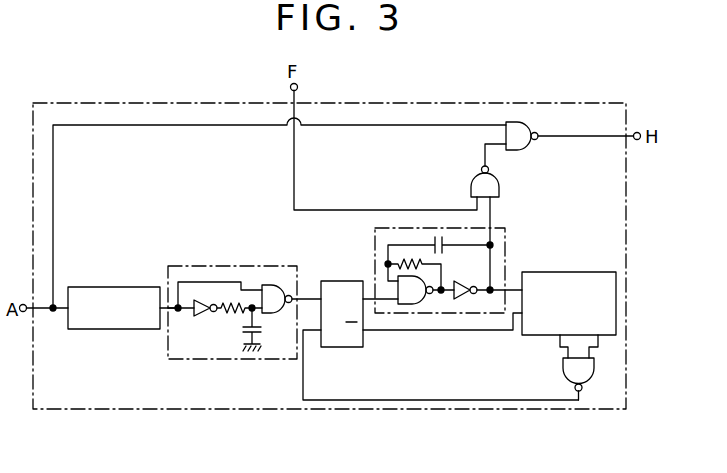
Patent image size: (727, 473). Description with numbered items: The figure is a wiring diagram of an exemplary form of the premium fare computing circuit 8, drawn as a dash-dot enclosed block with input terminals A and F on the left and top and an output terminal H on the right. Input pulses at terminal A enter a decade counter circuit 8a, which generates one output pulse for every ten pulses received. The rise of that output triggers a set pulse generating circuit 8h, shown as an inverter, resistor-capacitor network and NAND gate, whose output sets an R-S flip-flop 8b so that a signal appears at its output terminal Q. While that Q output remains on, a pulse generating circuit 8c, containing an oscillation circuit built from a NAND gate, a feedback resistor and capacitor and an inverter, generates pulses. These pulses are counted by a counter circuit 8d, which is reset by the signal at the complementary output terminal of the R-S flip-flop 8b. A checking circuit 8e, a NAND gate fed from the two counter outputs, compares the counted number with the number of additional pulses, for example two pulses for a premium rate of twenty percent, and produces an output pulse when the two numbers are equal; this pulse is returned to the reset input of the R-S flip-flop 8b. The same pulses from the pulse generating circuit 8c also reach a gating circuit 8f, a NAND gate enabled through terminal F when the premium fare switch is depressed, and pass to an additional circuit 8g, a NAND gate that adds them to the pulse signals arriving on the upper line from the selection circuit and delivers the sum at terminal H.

The premium fare computing circuit 8 is at (178, 409).
The decade counter circuit 8a is at (125, 287).
The R-S flip-flop 8b is at (343, 281).
The pulse generating circuit 8c is at (405, 313).
The counter circuit 8d is at (578, 272).
The checking circuit 8e is at (563, 372).
The gating circuit 8f is at (471, 186).
The additional circuit 8g is at (518, 150).
The set pulse generating circuit 8h is at (247, 266).